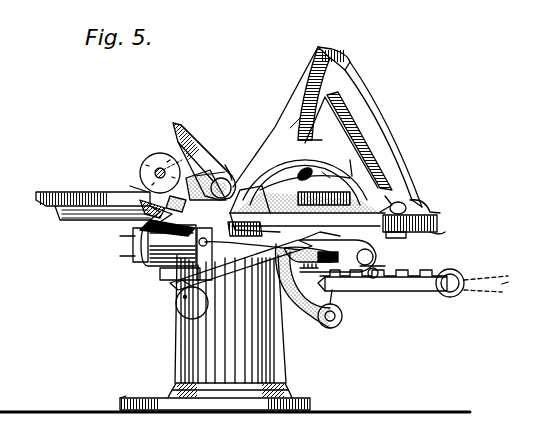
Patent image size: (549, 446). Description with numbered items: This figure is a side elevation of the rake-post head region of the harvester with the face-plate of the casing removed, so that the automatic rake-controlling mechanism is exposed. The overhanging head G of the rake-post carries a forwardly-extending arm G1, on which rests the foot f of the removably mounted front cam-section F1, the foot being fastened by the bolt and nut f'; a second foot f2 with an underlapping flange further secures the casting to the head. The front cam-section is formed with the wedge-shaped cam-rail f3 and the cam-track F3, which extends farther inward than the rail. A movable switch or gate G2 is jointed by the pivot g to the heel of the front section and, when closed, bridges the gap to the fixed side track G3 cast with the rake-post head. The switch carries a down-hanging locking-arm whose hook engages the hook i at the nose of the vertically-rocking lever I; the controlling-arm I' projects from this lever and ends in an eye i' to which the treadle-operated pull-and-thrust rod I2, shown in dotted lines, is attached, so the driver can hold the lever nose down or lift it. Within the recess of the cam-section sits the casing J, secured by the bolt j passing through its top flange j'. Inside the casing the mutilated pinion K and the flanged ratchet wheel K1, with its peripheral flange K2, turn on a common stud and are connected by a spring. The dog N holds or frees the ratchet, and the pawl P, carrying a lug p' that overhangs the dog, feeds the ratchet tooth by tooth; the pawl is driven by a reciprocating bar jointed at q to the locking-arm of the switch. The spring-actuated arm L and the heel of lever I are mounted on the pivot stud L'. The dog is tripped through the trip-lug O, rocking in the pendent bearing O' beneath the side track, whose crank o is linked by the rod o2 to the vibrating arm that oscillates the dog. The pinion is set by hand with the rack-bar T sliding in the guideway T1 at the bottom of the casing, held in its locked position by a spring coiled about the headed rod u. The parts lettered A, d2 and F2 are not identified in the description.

The pedestal A is at (215, 332).
The side track of the cam G3 is at (78, 190).
The head of the rake-post G is at (98, 224).
The pivot g is at (174, 184).
The disc d2 is at (157, 163).
The cam-switch G2 is at (212, 168).
The joint of reciprocating bar q is at (206, 181).
The trip-lug O is at (154, 245).
The pendent bearing O' is at (163, 281).
The crank o is at (204, 254).
The rod o2 is at (207, 287).
The hook of lever i is at (173, 294).
The switch dogging and releasing lever I is at (241, 265).
The controlling-arm I' is at (303, 286).
The eye i' is at (322, 322).
The ratchet wheel K1 is at (336, 310).
The cam-track F3 is at (302, 114).
The cam-rail f3 is at (288, 130).
The front cam-section F1 is at (363, 134).
The dog N is at (355, 168).
The screw or bolt j is at (305, 180).
The top flange of casing j' is at (313, 173).
The lug of pawl arm p' is at (314, 196).
The plate F2 is at (307, 209).
The second foot f2 is at (245, 225).
The forwardly-extending arm G1 is at (438, 236).
The foot of front cam-section f is at (425, 199).
The bolt and nut f' is at (436, 245).
The casing J is at (393, 201).
The flange of ratchet wheel K2 is at (338, 246).
The mutilated pinion K is at (325, 236).
The pivot stud L' is at (382, 263).
The spring-actuated arm L is at (383, 275).
The pawl P is at (307, 245).
The headed rod u is at (309, 271).
The rack-bar T is at (440, 292).
The guideway T1 is at (384, 290).
The pull-and-thrust rod I2 is at (486, 291).